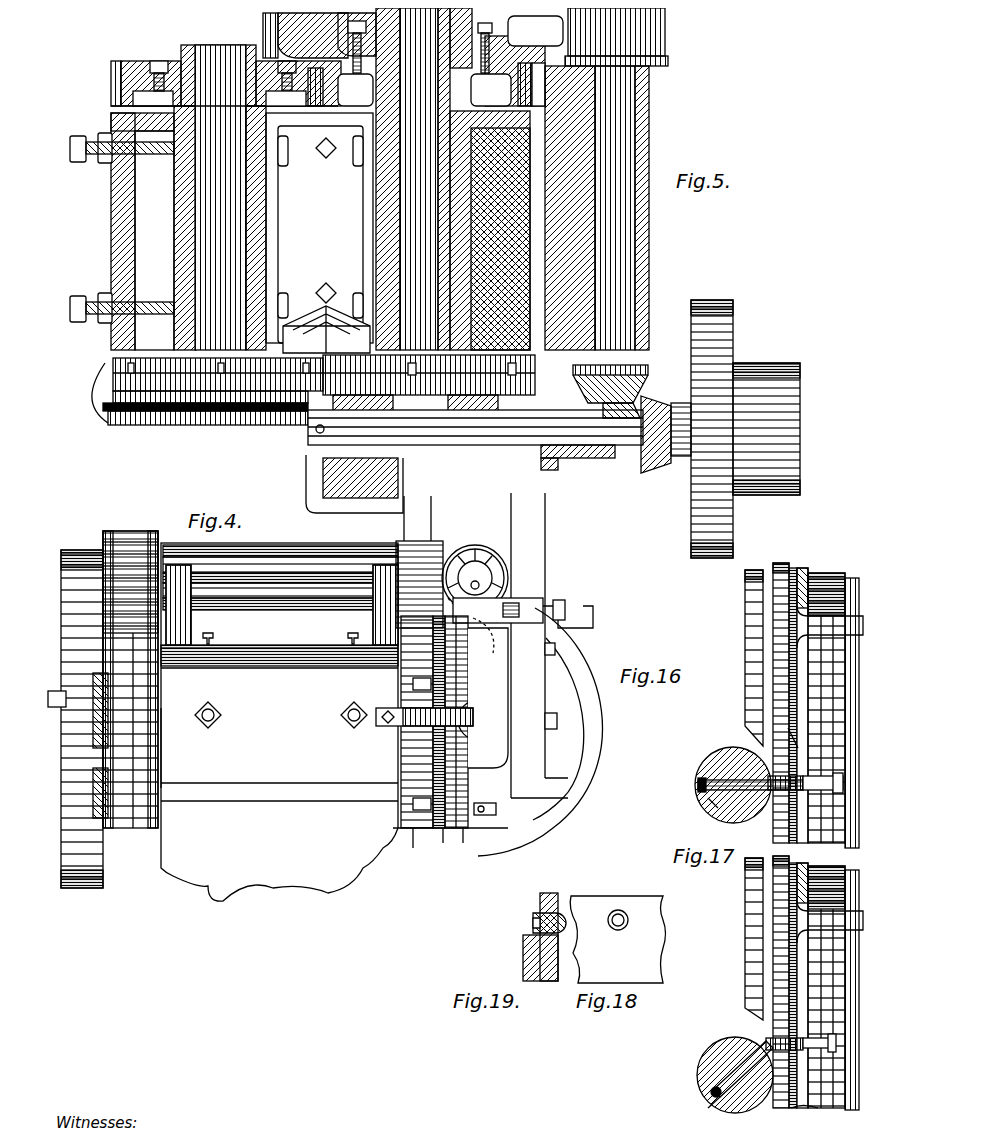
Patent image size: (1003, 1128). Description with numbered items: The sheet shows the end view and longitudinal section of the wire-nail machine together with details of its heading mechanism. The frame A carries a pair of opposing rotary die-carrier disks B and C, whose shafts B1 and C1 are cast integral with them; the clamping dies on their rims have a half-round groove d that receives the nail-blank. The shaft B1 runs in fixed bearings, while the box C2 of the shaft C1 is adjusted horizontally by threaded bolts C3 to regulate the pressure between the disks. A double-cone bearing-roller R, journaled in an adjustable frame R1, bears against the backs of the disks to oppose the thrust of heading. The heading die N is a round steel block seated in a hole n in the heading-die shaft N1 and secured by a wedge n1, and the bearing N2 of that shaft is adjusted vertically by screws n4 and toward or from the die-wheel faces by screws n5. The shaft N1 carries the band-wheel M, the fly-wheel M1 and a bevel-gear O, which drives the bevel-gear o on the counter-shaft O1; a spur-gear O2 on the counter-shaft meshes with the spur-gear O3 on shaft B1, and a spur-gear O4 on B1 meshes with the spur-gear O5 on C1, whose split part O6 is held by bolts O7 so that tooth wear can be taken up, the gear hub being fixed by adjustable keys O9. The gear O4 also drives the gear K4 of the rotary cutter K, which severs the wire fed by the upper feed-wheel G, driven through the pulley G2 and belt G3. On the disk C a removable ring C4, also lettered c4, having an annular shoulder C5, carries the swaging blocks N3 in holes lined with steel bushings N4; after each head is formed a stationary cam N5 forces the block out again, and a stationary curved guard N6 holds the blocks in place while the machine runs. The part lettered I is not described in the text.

In FIG. 5, the shaft of die-carrier disk C C1 is at (220, 197).
In FIG. 5, the spur-gear O5 is at (248, 37).
In FIG. 4, the spur-gear O5 is at (92, 810).
In FIG. 5, the split part of spur-gear O6 is at (110, 75).
In FIG. 4, the split part of spur-gear O6 is at (135, 690).
In FIG. 5, the bolts O7 is at (151, 53).
In FIG. 5, the box or bearing of shaft C' C2 is at (142, 231).
In FIG. 4, the box or bearing of shaft C' C2 is at (155, 750).
In FIG. 5, the threaded bolts C3 is at (70, 128).
In FIG. 4, the threaded bolts C3 is at (206, 700).
In FIG. 5, the frame for double-cone roll R1 is at (319, 228).
In FIG. 5, the double-cone bearing-roller R is at (305, 300).
In FIG. 5, the shaft of die-carrier disk B B1 is at (412, 205).
In FIG. 5, the spur-gear on shaft B' O3 is at (506, 57).
In FIG. 4, the spur-gear on shaft B' O3 is at (78, 542).
In FIG. 5, the spur-gear on shaft B' O4 is at (424, 64).
In FIG. 5, the counter-shaft O1 is at (630, 255).
In FIG. 5, the spur-gear on counter-shaft O2 is at (657, 24).
In FIG. 5, the rotary die-carrier disk C is at (218, 374).
In FIG. 16, the rotary die-carrier disk C is at (833, 710).
In FIG. 17, the rotary die-carrier disk C is at (833, 988).
In FIG. 5, the rotary die-carrier disk B is at (429, 384).
In FIG. 5, the annular shoulder or offset C5 is at (110, 389).
In FIG. 4, the annular shoulder or offset C5 is at (420, 820).
In FIG. 16, the annular shoulder or offset C5 is at (785, 740).
In FIG. 17, the annular shoulder or offset C5 is at (800, 1100).
In FIG. 19, the annular shoulder or offset C5 is at (515, 935).
In FIG. 5, the ring or projecting flange C4 is at (80, 388).
In FIG. 4, the ring or projecting flange C4 is at (438, 820).
In FIG. 16, the ring or projecting flange C4 is at (773, 555).
In FIG. 17, the ring or projecting flange C4 is at (773, 925).
In FIG. 19, the ring or projecting flange C4 is at (541, 885).
In FIG. 18, the ring or projecting flange C4 is at (617, 939).
In FIG. 5, the stationary curved guard N6 is at (190, 417).
In FIG. 4, the stationary curved guard N6 is at (455, 820).
In FIG. 16, the stationary curved guard N6 is at (737, 608).
In FIG. 17, the stationary curved guard N6 is at (737, 925).
In FIG. 5, the heading-die shaft N1 is at (475, 427).
In FIG. 4, the heading-die shaft N1 is at (465, 700).
In FIG. 16, the heading-die shaft N1 is at (700, 748).
In FIG. 17, the heading-die shaft N1 is at (700, 1042).
In FIG. 5, the rotary heading die or tool N is at (333, 431).
In FIG. 16, the rotary heading die or tool N is at (705, 795).
In FIG. 17, the rotary heading die or tool N is at (705, 1095).
In FIG. 5, the box or bearing of heading-die shaft N2 is at (395, 455).
In FIG. 4, the box or bearing of heading-die shaft N2 is at (478, 650).
In FIG. 5, the bevel-gear on counter-shaft o is at (640, 365).
In FIG. 5, the bevel-gear on header shaft O is at (640, 465).
In FIG. 5, the fly-wheel M1 is at (712, 429).
In FIG. 4, the fly-wheel M1 is at (548, 720).
In FIG. 5, the band-wheel M is at (766, 429).
In FIG. 4, the gear on knife-shaft K4 is at (120, 523).
In FIG. 4, the adjustable key O9 is at (50, 699).
In FIG. 4, the frame A is at (279, 722).
In FIG. 4, the rotary cutter or knife K is at (405, 555).
In FIG. 4, the belt G3 is at (423, 510).
In FIG. 4, the driving-pulley or band wheel G2 is at (475, 540).
In FIG. 4, the upper feed-wheel G is at (475, 586).
In FIG. 4, the arm I is at (510, 598).
In FIG. 4, the screws n5 is at (548, 640).
In FIG. 4, the screws n4 is at (490, 820).
In FIG. 16, the stationary cam N5 is at (790, 560).
In FIG. 17, the stationary cam N5 is at (788, 890).
In FIG. 16, the ring or projecting flange c4 is at (800, 560).
In FIG. 17, the ring or projecting flange c4 is at (800, 855).
In FIG. 16, the swaging block or die N3 is at (770, 768).
In FIG. 17, the swaging block or die N3 is at (765, 1030).
In FIG. 19, the swaging block or die N3 is at (528, 906).
In FIG. 18, the swaging block or die N3 is at (610, 918).
In FIG. 16, the slot or hole in heading-die shaft n is at (690, 777).
In FIG. 17, the slot or hole in heading-die shaft n is at (705, 1085).
In FIG. 16, the wedge n1 is at (690, 772).
In FIG. 17, the wedge n1 is at (705, 1080).
In FIG. 17, the half-round groove d is at (805, 1030).
In FIG. 19, the steel bushing N4 is at (525, 915).
In FIG. 18, the steel bushing N4 is at (610, 902).